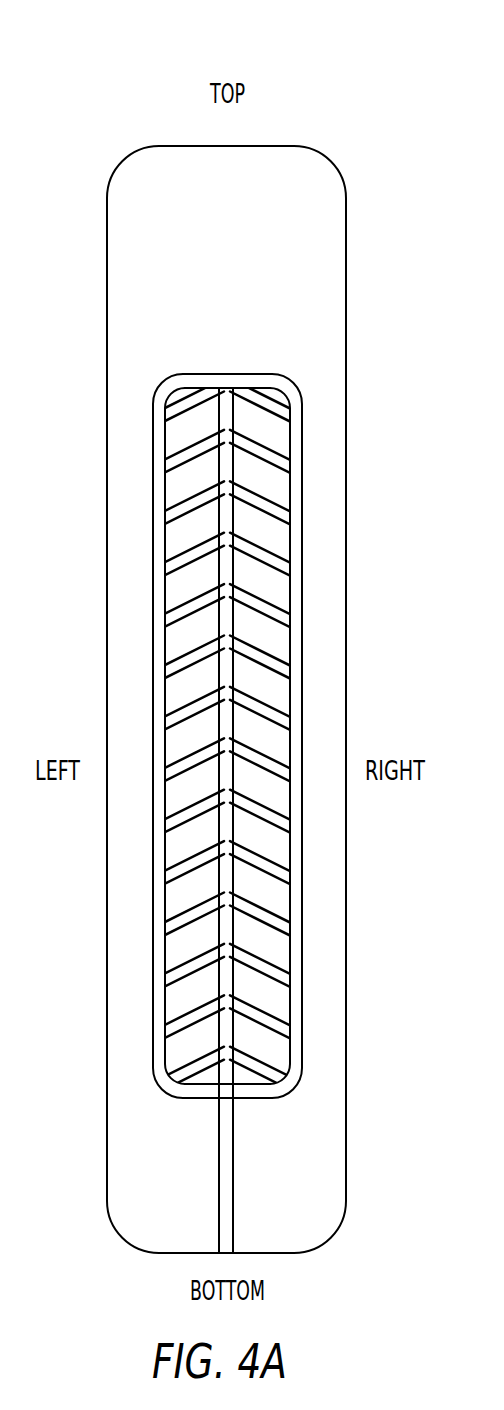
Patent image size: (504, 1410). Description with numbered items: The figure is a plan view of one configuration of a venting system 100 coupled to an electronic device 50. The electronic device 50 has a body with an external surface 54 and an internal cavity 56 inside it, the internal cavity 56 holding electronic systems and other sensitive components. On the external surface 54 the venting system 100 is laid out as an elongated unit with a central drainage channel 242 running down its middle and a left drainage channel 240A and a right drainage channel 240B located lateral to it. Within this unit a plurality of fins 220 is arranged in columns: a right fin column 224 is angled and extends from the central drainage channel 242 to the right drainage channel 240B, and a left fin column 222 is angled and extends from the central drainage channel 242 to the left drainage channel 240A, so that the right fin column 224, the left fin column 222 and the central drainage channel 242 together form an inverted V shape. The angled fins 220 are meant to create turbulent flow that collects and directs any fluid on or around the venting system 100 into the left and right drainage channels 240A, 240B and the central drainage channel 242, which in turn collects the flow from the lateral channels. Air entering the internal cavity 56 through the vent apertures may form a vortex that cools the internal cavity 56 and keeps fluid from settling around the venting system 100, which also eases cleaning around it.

The electronic device 50 is at (136, 126).
The external surface 54 is at (346, 232).
The internal cavity 56 is at (270, 850).
The venting system 100 is at (220, 318).
The plurality of fins 220 is at (182, 1114).
The left fin column 222 is at (186, 400).
The right fin column 224 is at (267, 400).
The left drainage channel 240A is at (158, 482).
The right drainage channel 240B is at (296, 660).
The central drainage channel 242 is at (225, 384).